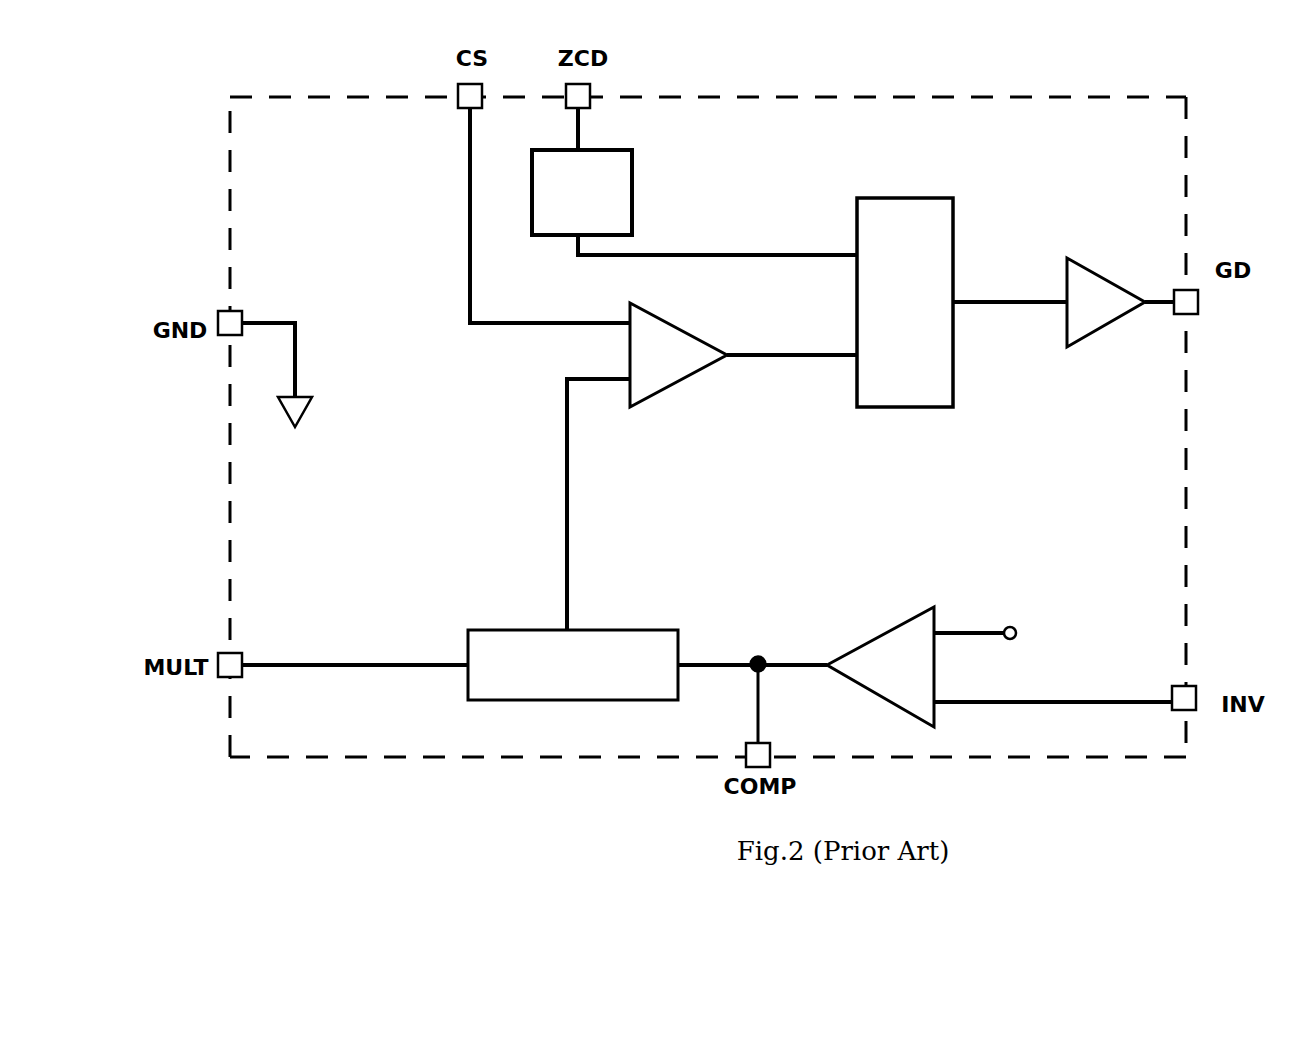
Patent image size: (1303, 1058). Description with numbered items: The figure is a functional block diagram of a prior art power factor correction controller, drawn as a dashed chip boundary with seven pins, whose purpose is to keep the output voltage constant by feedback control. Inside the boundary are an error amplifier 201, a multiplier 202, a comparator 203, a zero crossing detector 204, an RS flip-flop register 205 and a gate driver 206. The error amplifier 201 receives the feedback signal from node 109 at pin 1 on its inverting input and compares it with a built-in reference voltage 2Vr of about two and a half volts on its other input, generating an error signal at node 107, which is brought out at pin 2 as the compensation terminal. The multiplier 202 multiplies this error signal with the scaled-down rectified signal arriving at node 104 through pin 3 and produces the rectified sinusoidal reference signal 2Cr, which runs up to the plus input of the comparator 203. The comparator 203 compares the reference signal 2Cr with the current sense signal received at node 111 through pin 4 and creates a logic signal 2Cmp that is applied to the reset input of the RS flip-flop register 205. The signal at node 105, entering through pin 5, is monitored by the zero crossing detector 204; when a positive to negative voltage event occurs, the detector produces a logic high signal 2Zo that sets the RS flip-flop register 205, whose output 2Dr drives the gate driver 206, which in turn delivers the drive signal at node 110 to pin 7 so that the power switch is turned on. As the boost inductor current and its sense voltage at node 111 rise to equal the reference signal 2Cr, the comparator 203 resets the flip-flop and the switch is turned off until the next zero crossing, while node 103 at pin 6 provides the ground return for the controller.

The pin 1 is at (1178, 709).
The pin 2 is at (751, 743).
The pin 3 is at (240, 650).
The pin 4 is at (462, 107).
The pin 5 is at (568, 106).
The pin 6 is at (246, 314).
The pin 7 is at (1181, 314).
The node 103 is at (288, 320).
The node 104 is at (320, 663).
The node 105 is at (578, 126).
The node 107 is at (760, 687).
The node 109 is at (1108, 700).
The node 110 is at (1168, 303).
The node 111 is at (467, 152).
The error amplifier 201 is at (862, 640).
The multiplier 202 is at (537, 628).
The comparator 203 is at (688, 378).
The zero crossing detector 204 is at (632, 163).
The RS flip-flop register 205 is at (917, 407).
The gate driver 206 is at (1097, 273).
The zero crossing detector output signal 2Zo is at (690, 253).
The comparator output signal 2Cmp is at (767, 352).
The flip-flop output signal 2Dr is at (980, 300).
The rectified sinusoidal reference signal 2Cr is at (567, 520).
The reference voltage 2Vr is at (970, 630).